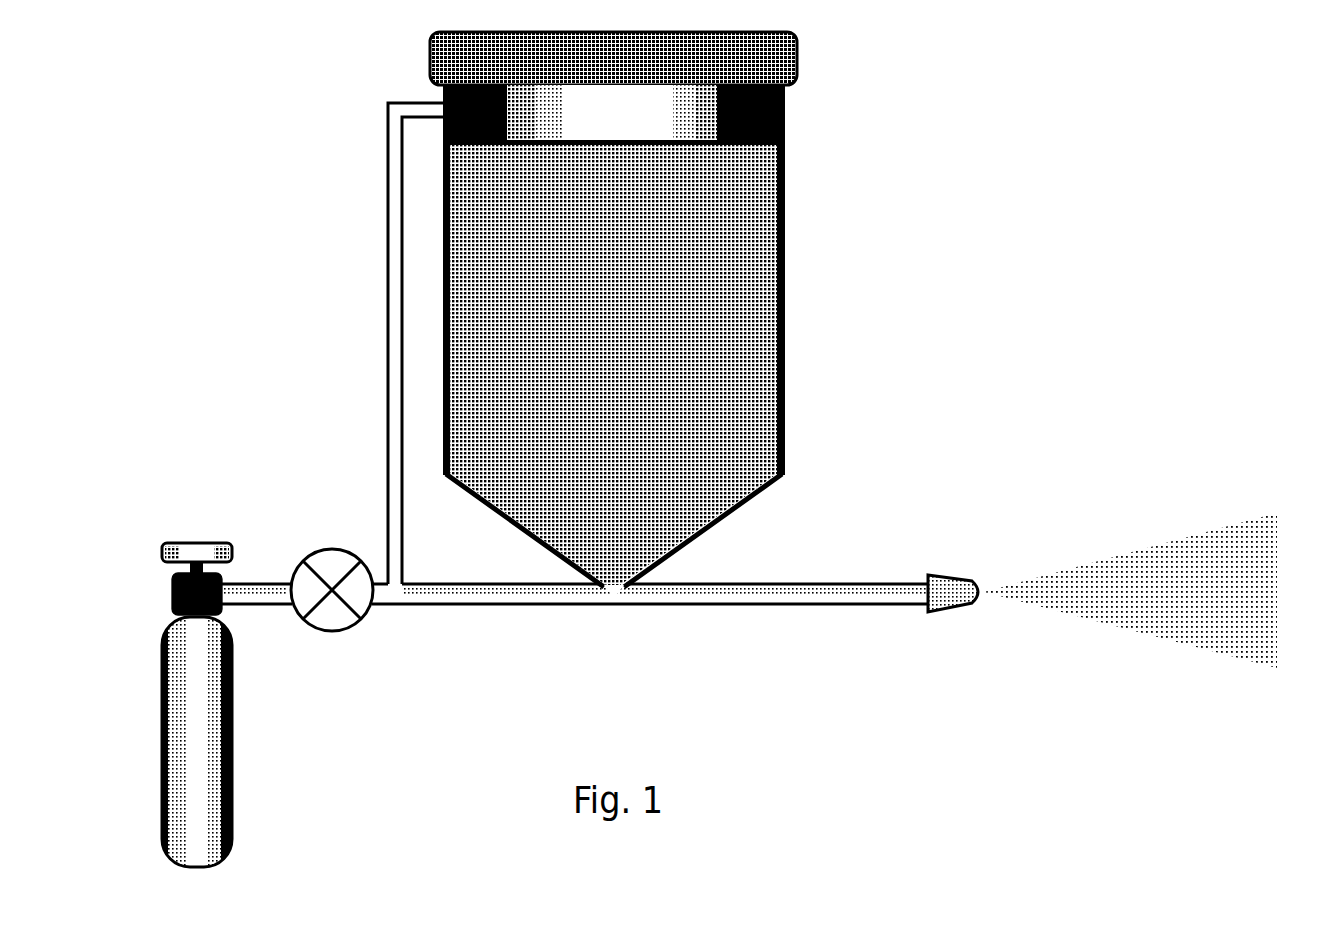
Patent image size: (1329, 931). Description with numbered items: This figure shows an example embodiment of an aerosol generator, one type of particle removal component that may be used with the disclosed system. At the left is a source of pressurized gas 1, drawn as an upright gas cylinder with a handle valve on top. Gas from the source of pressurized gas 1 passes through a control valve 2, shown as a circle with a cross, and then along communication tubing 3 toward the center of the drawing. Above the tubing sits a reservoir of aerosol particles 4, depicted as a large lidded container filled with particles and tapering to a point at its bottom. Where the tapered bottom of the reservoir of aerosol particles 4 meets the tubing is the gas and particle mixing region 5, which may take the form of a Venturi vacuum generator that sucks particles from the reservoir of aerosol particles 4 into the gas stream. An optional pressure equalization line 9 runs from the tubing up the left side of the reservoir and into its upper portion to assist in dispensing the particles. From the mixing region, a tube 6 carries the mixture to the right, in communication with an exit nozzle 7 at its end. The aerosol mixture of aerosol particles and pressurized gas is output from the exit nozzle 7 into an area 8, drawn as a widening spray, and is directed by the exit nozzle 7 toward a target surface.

The source of pressurized gas 1 is at (160, 690).
The control valve 2 is at (331, 632).
The communication tubing 3 is at (272, 583).
The reservoir of aerosol particles 4 is at (443, 280).
The gas and particle mixing region 5 is at (613, 608).
The tube 6 is at (858, 583).
The exit nozzle 7 is at (947, 575).
The area 8 is at (1110, 558).
The pressure equalization line 9 is at (388, 337).